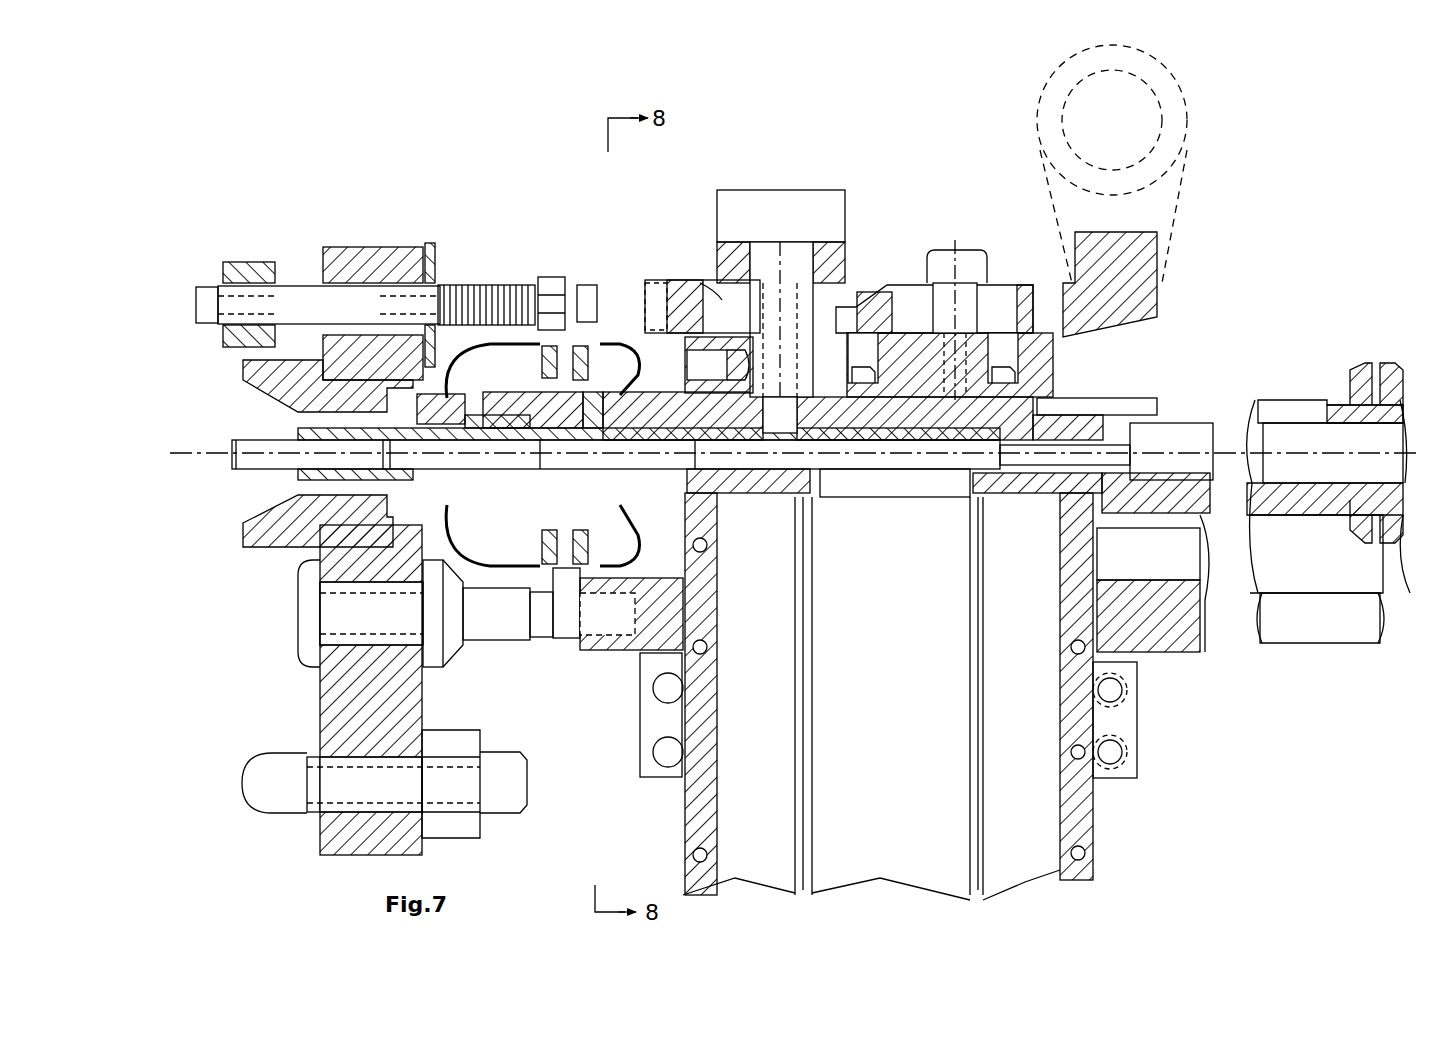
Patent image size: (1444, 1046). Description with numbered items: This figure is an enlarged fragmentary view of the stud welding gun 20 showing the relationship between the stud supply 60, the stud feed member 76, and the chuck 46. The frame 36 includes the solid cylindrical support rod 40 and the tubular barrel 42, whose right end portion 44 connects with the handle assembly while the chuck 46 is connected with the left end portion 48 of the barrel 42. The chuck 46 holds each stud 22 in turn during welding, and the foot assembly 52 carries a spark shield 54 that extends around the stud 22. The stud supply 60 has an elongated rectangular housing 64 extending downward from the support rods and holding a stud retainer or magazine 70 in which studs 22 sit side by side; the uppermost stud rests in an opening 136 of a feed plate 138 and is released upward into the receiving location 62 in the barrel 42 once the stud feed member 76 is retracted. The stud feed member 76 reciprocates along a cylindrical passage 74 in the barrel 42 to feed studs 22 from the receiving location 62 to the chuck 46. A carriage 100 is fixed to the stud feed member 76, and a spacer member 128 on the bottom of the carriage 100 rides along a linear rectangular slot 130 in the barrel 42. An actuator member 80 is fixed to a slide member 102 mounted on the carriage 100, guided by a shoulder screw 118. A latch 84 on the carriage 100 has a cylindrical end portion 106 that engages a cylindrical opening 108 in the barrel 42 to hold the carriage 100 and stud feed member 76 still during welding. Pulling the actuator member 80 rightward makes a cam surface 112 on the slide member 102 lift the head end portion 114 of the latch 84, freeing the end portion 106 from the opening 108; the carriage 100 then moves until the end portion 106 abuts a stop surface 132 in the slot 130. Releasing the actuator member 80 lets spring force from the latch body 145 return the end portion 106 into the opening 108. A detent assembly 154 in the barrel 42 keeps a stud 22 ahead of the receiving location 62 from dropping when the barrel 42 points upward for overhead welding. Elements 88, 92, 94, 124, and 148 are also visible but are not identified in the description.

The stud welding gun 20 is at (1335, 148).
The stud 22 is at (232, 469).
The frame 36 is at (1255, 392).
The support rod 40 is at (1297, 620).
The barrel 42 is at (1208, 392).
The end portion 44 is at (1378, 395).
The chuck 46 is at (345, 395).
The left end portion 48 is at (520, 340).
The foot assembly 52 is at (352, 858).
The spark shield 54 is at (260, 370).
The stud supply 60 is at (680, 795).
The receiving location 62 is at (716, 495).
The housing 64 is at (698, 870).
The stud retainer 70 is at (885, 830).
The cylindrical passage 74 is at (1305, 470).
The stud feed member 76 is at (1150, 405).
The actuator member 80 is at (1182, 133).
The latch 84 is at (805, 180).
The wall 88 is at (988, 862).
The hole 92 is at (745, 832).
The plate 94 is at (1050, 818).
The carriage 100 is at (280, 480).
The slide member 102 is at (1025, 282).
The cylindrical end portion 106 is at (705, 300).
The cylindrical opening 108 is at (755, 430).
The cam surface 112 is at (445, 395).
The head end portion 114 is at (835, 205).
The shoulder screw 118 is at (957, 248).
The bore 124 is at (780, 480).
The spacer member 128 is at (1052, 440).
The slot 130 is at (1192, 412).
The stop surface 132 is at (1157, 402).
The opening 136 is at (960, 530).
The feed plate 138 is at (1075, 480).
The latch body 145 is at (800, 320).
The bore 148 is at (775, 260).
The detent assembly 154 is at (597, 382).